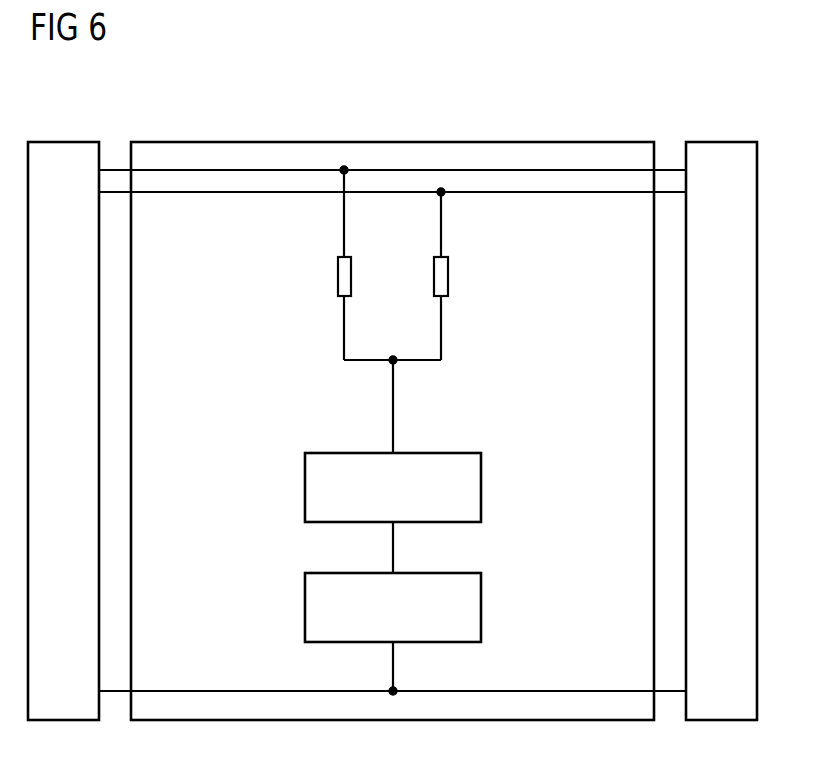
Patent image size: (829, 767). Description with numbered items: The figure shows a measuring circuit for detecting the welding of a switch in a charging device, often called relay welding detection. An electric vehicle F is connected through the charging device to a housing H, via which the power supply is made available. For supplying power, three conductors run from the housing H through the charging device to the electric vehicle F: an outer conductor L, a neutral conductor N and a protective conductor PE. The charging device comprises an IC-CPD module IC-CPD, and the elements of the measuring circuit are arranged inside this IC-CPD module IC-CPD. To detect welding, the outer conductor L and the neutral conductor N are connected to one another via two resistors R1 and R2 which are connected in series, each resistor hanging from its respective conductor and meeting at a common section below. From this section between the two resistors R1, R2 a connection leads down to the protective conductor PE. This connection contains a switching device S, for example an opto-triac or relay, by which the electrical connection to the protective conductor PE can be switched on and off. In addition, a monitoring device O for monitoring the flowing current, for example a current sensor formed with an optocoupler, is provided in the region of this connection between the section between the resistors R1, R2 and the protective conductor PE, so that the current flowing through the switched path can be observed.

The housing H is at (63, 142).
The IC-CPD module IC-CPD is at (392, 143).
The electric vehicle F is at (720, 143).
The outer conductor L is at (381, 169).
The neutral conductor N is at (381, 191).
The protective conductor PE is at (375, 692).
The first resistor R1 is at (338, 276).
The second resistor R2 is at (448, 277).
The switching device S is at (481, 490).
The monitoring device O is at (481, 608).